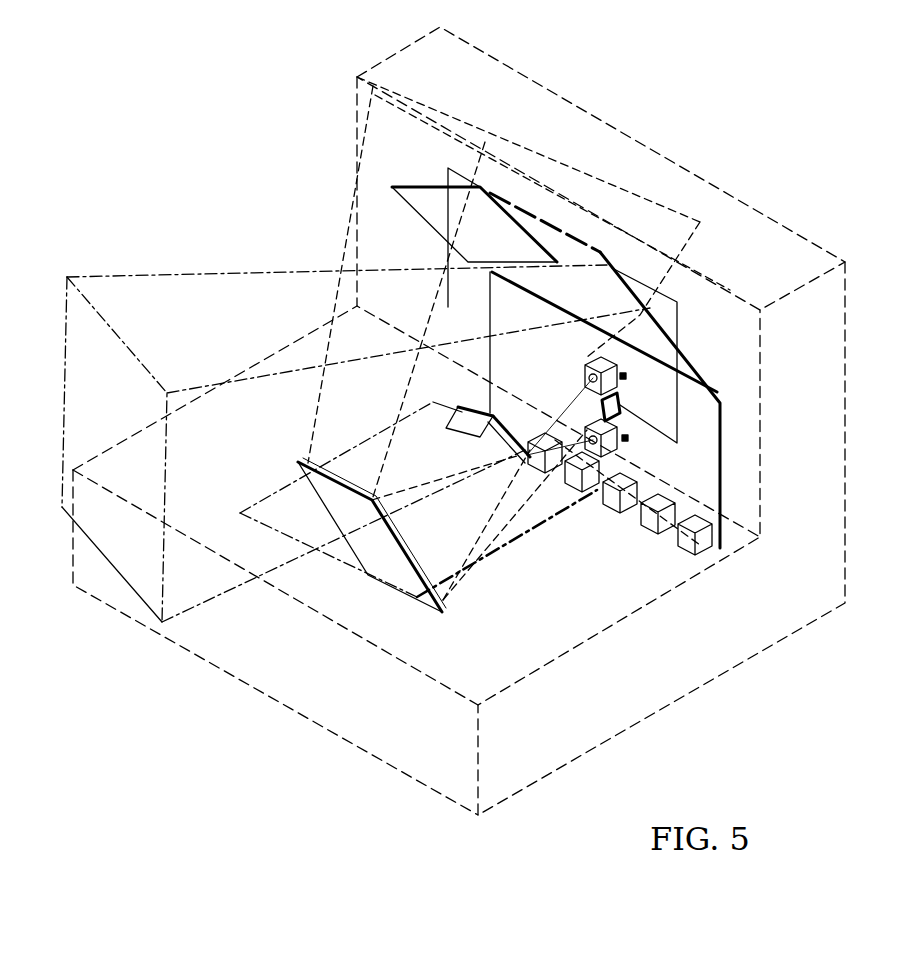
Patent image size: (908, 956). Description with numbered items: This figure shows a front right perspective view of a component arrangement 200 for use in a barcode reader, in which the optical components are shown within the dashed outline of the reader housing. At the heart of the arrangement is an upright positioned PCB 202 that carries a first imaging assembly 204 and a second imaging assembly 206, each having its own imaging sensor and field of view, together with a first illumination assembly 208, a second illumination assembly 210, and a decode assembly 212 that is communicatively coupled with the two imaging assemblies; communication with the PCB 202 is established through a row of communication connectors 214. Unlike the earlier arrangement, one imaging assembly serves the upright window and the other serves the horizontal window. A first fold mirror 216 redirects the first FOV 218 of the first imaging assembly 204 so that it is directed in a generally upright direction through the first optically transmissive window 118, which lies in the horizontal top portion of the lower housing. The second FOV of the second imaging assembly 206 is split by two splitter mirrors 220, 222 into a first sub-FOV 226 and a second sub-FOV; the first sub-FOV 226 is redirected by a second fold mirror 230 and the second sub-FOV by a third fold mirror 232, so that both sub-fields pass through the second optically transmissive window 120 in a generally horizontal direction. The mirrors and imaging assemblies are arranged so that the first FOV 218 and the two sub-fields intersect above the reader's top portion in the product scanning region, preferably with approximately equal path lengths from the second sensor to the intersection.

The component arrangement 200 is at (766, 128).
The first optically transmissive window 118 is at (285, 492).
The second optically transmissive window 120 is at (570, 235).
The PCB 202 is at (717, 495).
The first imaging assembly 204 is at (625, 458).
The second imaging assembly 206 is at (618, 372).
The first illumination assembly 208 is at (618, 437).
The second illumination assembly 210 is at (626, 376).
The decode assembly 212 is at (628, 438).
The communication connectors 214 is at (656, 556).
The first fold mirror 216 is at (388, 560).
The first FOV 218 is at (497, 532).
The splitter mirror 220 is at (510, 455).
The splitter mirror 222 is at (467, 410).
The first sub-FOV 226 is at (576, 345).
The second fold mirror 230 is at (680, 335).
The third fold mirror 232 is at (412, 187).